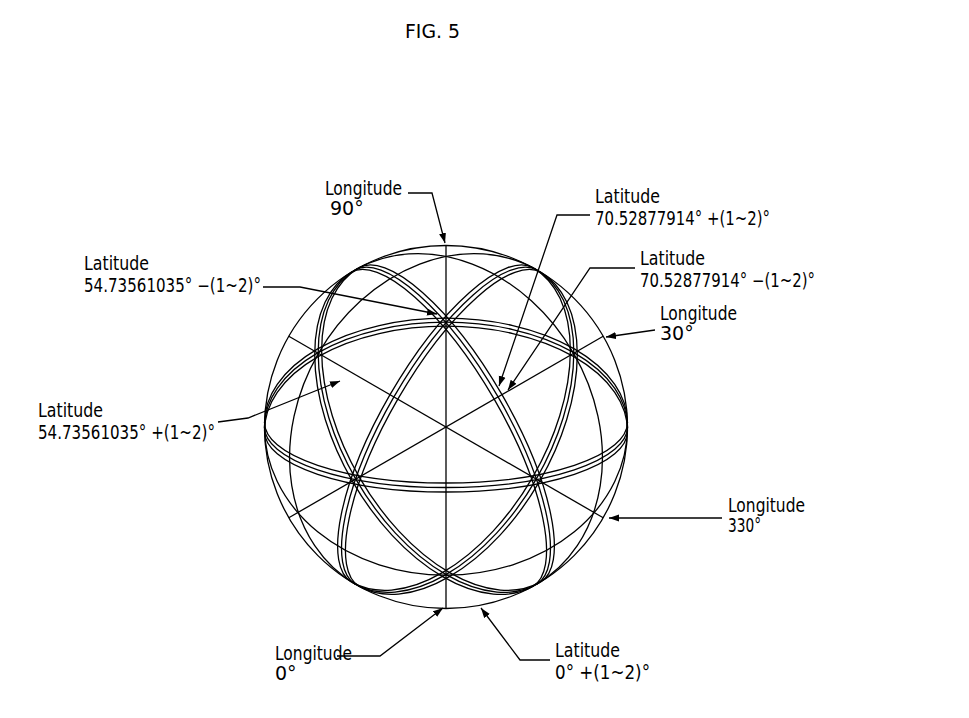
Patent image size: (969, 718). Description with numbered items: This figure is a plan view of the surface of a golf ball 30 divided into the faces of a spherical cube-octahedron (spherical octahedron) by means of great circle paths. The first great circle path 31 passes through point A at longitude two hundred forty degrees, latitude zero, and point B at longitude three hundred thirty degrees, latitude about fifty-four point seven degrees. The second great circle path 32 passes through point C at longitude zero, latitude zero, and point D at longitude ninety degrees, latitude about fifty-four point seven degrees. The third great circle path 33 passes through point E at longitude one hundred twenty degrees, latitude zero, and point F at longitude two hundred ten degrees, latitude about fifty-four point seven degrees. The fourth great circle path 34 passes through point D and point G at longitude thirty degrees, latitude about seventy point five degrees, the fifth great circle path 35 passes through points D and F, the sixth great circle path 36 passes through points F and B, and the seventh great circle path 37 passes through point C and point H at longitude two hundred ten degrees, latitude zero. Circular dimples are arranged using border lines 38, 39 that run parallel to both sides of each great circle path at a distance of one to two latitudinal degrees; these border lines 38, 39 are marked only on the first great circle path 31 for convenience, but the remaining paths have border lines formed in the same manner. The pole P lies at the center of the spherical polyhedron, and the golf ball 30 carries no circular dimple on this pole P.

The golf ball 30 is at (187, 139).
The first great circle path 31 is at (532, 419).
The second great circle path 32 is at (446, 304).
The third great circle path 33 is at (370, 431).
The fourth great circle path 34 is at (487, 457).
The fifth great circle path 35 is at (366, 426).
The sixth great circle path 36 is at (393, 419).
The seventh great circle path 37 is at (446, 531).
The border line 38 is at (465, 443).
The border line 39 is at (491, 437).
The pole P is at (573, 558).